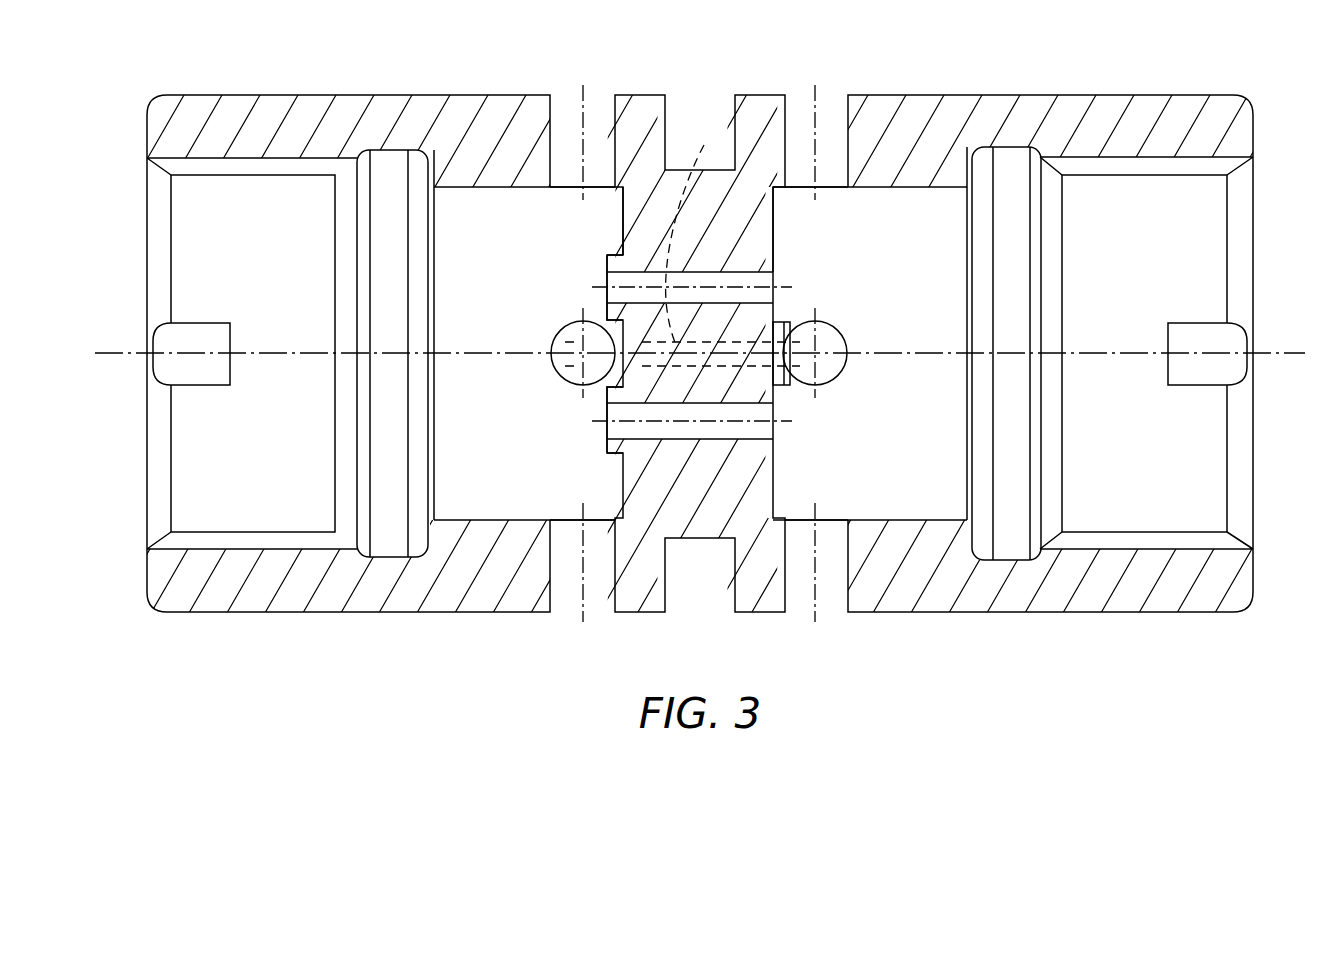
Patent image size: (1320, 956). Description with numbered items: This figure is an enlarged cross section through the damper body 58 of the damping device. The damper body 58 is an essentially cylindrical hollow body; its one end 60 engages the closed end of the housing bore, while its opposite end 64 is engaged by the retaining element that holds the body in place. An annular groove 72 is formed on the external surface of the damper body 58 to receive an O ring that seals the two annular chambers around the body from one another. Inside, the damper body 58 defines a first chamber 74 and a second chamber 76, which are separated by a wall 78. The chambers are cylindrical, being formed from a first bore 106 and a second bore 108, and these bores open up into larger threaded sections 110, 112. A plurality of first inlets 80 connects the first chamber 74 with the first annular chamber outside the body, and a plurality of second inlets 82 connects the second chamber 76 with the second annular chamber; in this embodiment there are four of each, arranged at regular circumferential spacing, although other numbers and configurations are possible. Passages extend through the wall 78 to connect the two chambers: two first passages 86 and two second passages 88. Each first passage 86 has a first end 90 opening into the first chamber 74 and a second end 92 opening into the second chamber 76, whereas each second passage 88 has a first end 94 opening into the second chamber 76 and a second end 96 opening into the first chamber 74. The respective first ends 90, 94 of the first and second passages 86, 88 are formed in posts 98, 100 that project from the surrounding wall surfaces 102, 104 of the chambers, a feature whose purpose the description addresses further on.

The damper body 58 is at (660, 328).
The end of the damper body 60 is at (1253, 575).
The opposite end of the damper body 64 is at (147, 575).
The annular groove 72 is at (660, 380).
The first chamber 74 is at (880, 500).
The second chamber 76 is at (457, 500).
The wall 78 is at (653, 510).
The first inlets 80 is at (832, 107).
The second inlets 82 is at (565, 107).
The first passages 86 is at (682, 244).
The second passages 88 is at (773, 277).
The first end of the first passage 90 is at (786, 343).
The second end of the first passage 92 is at (607, 392).
The first end of the second passage 94 is at (607, 272).
The second end of the second passage 96 is at (773, 297).
The post 98 is at (790, 386).
The post 100 is at (607, 255).
The wall surface 102 is at (775, 214).
The wall surface 104 is at (623, 225).
The first bore 106 is at (940, 188).
The second bore 108 is at (460, 188).
The threaded section 110 is at (1150, 176).
The threaded section 112 is at (262, 176).